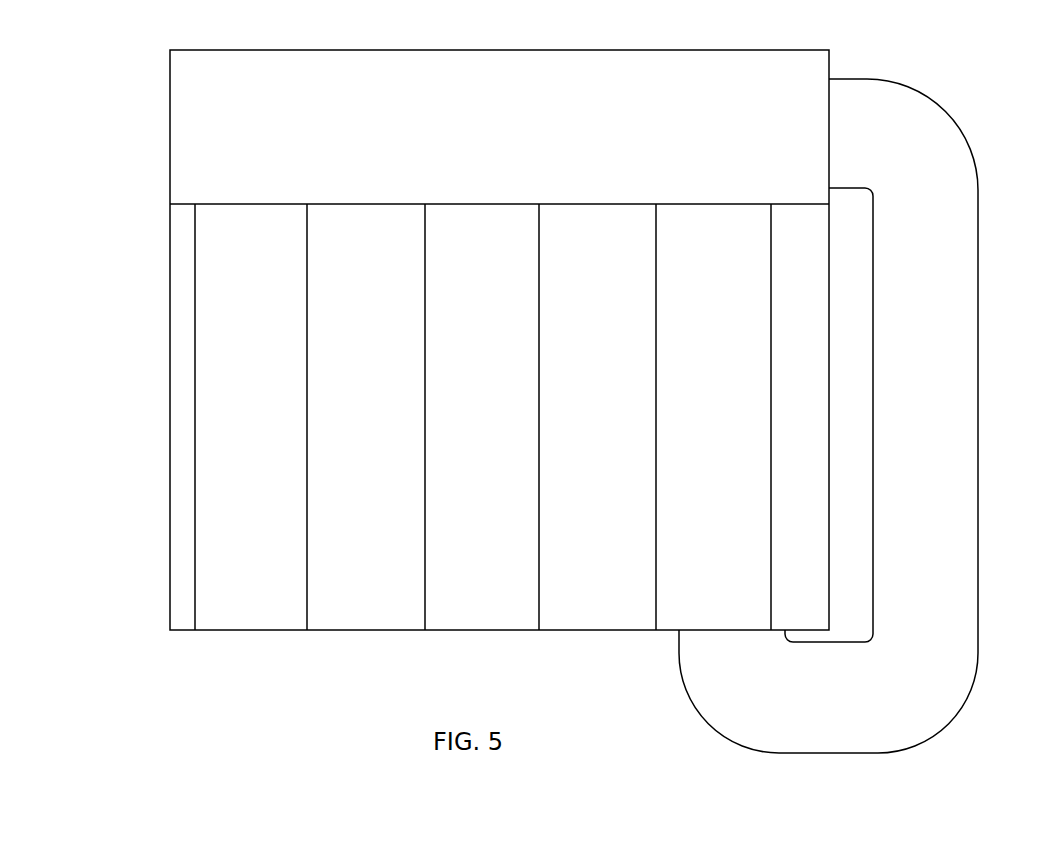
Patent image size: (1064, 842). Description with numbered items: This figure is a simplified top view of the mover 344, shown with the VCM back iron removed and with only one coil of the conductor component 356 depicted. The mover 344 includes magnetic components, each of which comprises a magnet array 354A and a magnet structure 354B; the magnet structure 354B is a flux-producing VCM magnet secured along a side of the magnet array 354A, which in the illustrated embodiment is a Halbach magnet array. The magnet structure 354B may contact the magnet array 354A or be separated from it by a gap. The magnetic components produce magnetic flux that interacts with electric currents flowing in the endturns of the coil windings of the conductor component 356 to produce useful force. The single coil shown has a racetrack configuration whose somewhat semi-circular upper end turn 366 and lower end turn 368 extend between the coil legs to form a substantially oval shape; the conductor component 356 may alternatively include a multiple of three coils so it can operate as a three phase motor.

The mover 344 is at (130, 110).
The magnet array 354A is at (198, 480).
The magnet structure 354B is at (199, 145).
The conductor component 356 is at (917, 398).
The upper end turn 366 is at (863, 127).
The lower end turn 368 is at (863, 713).